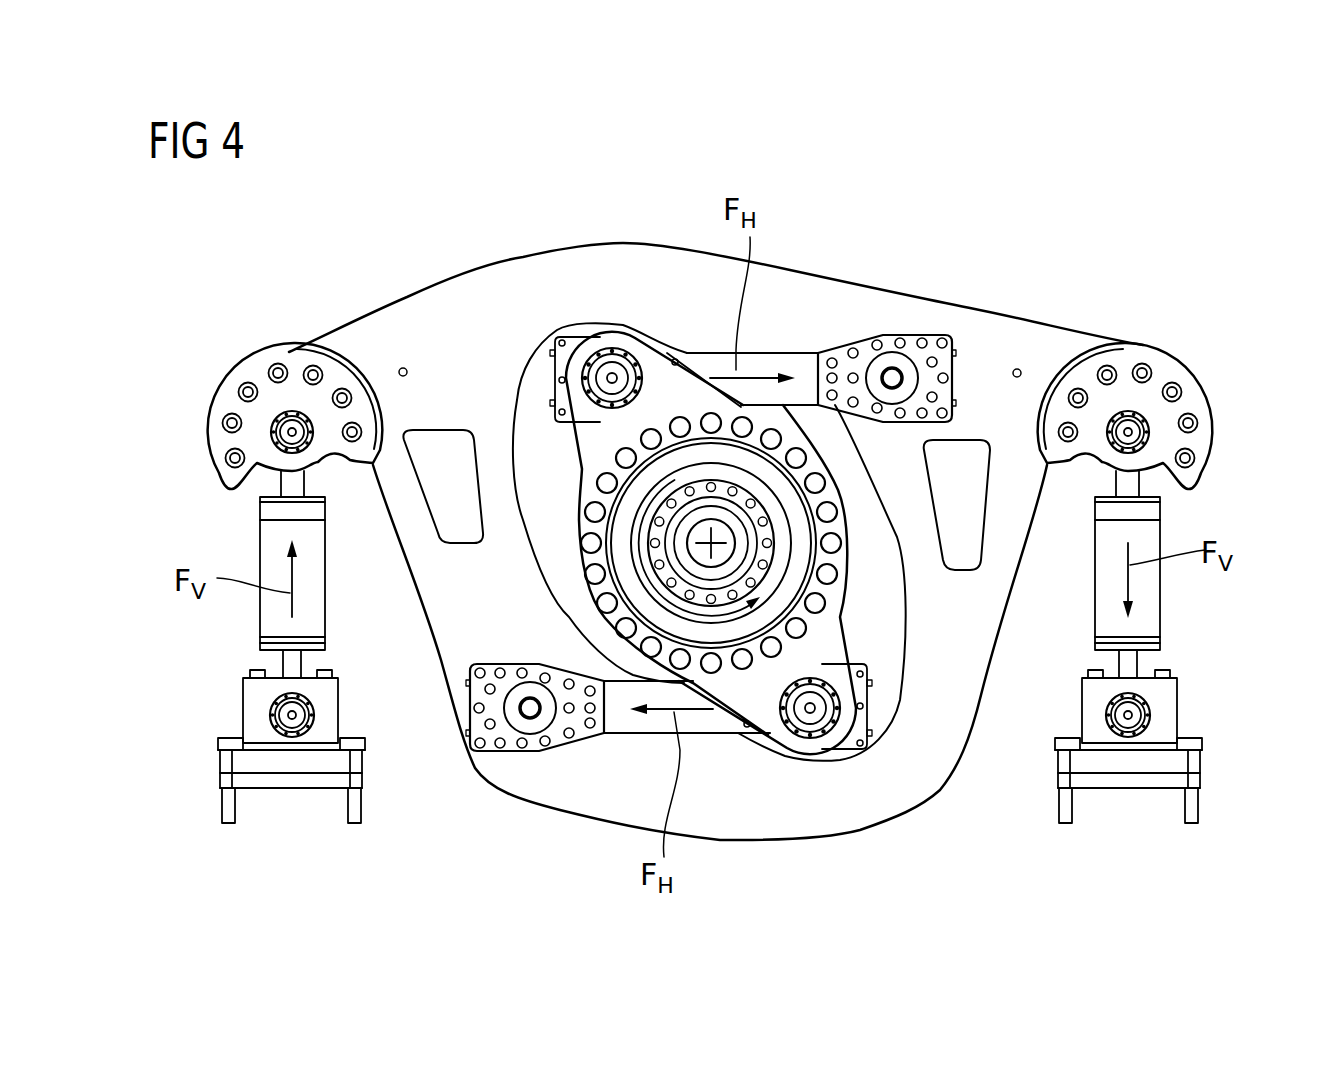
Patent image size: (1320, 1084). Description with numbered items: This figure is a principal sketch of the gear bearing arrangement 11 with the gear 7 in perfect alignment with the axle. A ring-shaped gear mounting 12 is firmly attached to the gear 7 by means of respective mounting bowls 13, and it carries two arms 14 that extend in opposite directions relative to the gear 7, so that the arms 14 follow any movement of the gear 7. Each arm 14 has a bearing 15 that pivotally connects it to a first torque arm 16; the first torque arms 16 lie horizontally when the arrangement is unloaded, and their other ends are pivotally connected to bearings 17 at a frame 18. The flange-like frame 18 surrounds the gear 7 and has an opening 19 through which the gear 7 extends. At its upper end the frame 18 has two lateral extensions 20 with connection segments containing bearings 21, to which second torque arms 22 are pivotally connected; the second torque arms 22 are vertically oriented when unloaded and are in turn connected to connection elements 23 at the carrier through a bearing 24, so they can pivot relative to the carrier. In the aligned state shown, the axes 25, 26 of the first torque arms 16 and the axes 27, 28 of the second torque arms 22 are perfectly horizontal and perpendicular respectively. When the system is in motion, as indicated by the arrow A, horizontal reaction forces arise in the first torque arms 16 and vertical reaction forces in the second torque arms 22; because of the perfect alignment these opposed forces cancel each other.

The gear bearing arrangement 11 is at (1030, 210).
The gear 7 is at (785, 558).
The gear mounting 12 is at (847, 610).
The mounting bowls 13 is at (772, 660).
The arms 14 is at (628, 345).
The bearings 15 is at (605, 356).
The first torque arms 16 is at (777, 352).
The bearings 17 is at (902, 345).
The frame 18 is at (684, 262).
The opening 19 is at (876, 643).
The lateral extensions 20 is at (358, 340).
The bearings 21 is at (270, 433).
The second torque arms 22 is at (260, 550).
The connection elements 23 is at (243, 690).
The bearing 24 is at (270, 727).
The axis 25 is at (612, 372).
The axis 26 is at (892, 366).
The axis 27 is at (292, 428).
The axis 28 is at (292, 718).
The arrow A is at (785, 527).